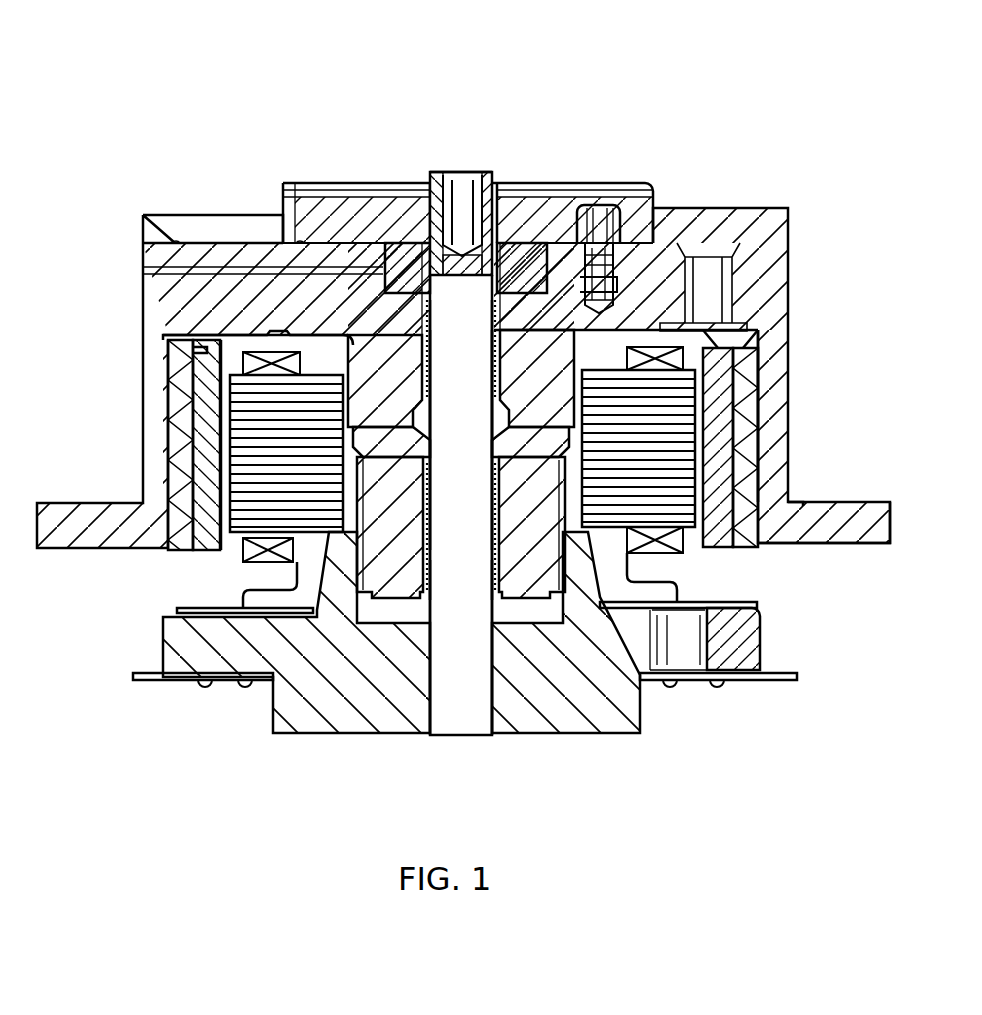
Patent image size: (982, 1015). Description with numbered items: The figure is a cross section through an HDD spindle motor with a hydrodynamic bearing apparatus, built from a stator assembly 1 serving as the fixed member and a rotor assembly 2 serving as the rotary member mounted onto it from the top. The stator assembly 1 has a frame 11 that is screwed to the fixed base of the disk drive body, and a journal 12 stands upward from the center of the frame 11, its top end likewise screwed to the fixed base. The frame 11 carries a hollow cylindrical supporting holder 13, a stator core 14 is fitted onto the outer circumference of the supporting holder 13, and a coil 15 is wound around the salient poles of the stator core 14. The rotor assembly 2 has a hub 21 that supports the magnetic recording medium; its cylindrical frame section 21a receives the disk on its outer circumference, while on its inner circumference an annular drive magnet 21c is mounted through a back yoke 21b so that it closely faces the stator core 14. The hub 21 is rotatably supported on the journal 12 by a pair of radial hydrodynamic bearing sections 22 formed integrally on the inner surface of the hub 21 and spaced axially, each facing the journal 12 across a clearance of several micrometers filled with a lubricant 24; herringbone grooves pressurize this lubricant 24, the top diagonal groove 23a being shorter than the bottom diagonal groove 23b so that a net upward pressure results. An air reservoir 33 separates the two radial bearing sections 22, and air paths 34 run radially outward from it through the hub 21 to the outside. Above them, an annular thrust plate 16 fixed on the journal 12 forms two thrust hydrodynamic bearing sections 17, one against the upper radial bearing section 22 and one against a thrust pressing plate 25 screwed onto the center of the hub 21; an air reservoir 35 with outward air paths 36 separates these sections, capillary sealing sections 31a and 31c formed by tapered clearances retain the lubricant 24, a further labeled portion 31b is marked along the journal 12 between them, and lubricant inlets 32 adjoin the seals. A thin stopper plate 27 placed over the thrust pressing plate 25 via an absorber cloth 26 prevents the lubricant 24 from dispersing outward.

The stator assembly 1 is at (680, 708).
The rotor assembly 2 is at (472, 185).
The frame 11 is at (610, 705).
The journal 12 is at (473, 707).
The supporting holder 13 is at (600, 575).
The stator core 14 is at (462, 451).
The coil 15 is at (240, 560).
The thrust plate 16 is at (300, 240).
The thrust hydrodynamic bearing section 17 is at (595, 230).
The hub 21 is at (692, 344).
The frame section 21a is at (770, 300).
The back yoke 21b is at (770, 420).
The drive magnet 21c is at (785, 455).
The radial hydrodynamic bearing section 22 is at (461, 420).
The top diagonal groove 23a is at (478, 322).
The bottom diagonal groove 23b is at (437, 575).
The lubricant 24 is at (420, 243).
The thrust pressing plate 25 is at (330, 215).
The absorber cloth 26 is at (355, 240).
The stopper plate 27 is at (398, 240).
The capillary sealing section 31a is at (415, 248).
The spline portion 31b is at (461, 490).
The capillary sealing section 31c is at (488, 205).
The lubricant inlet 32 is at (225, 450).
The air reservoir 33 is at (488, 440).
The air path 34 is at (215, 400).
The air reservoir 35 is at (280, 272).
The air path 36 is at (215, 266).